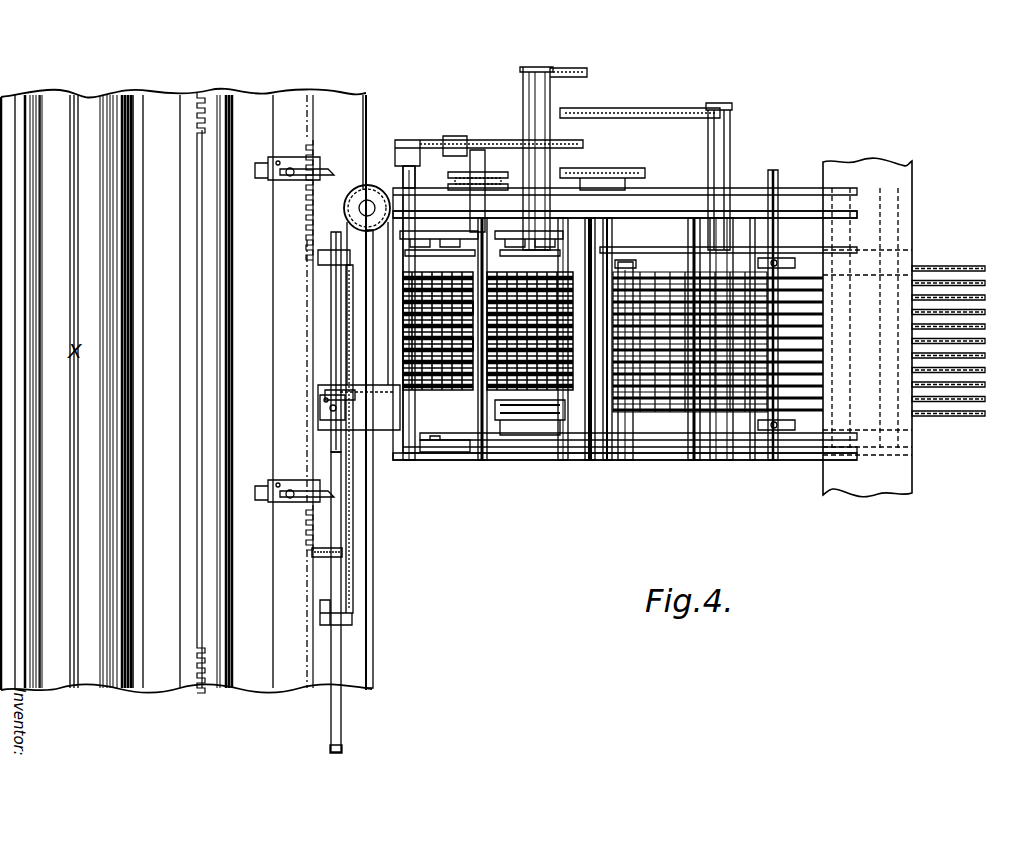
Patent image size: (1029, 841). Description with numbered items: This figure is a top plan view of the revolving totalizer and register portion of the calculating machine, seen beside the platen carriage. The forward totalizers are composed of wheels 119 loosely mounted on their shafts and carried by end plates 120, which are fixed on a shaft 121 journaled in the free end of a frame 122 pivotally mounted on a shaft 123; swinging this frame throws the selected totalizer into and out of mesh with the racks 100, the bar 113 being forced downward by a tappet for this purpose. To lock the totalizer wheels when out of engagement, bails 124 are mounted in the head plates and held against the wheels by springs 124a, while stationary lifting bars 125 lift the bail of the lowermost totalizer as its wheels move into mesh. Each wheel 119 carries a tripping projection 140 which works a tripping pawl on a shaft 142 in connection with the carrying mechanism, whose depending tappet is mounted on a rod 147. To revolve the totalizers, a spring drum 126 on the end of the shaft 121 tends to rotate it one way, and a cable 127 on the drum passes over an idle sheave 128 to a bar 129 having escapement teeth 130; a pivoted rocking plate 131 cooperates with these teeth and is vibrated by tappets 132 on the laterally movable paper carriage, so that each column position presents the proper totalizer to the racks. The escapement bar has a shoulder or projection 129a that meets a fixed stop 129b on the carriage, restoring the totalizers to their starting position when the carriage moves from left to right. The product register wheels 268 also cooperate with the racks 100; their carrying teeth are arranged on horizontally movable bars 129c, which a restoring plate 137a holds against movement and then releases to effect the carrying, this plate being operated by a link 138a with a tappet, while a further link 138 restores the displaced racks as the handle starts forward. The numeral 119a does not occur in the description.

The racks 100 is at (985, 357).
The bar 113 is at (580, 67).
The totalizer wheels 119 is at (403, 274).
The gear 119a is at (410, 312).
The end plates 120 is at (491, 334).
The shaft 121 is at (502, 456).
The frame 122 is at (655, 215).
The shaft 123 is at (848, 374).
The bails 124 is at (530, 421).
The springs 124a is at (404, 410).
The lifting bars 125 is at (439, 231).
The spring drum 126 is at (480, 191).
The cable 127 is at (367, 496).
The idle sheave 128 is at (356, 188).
The escapement bar 129 is at (330, 310).
The shoulder or projection 129a is at (342, 750).
The fixed stop 129b is at (342, 552).
The horizontally movable bar 129c is at (640, 405).
The escapement teeth 130 is at (352, 524).
The pivoted rocking plate 131 is at (330, 405).
The tappets 132 is at (288, 183).
The restoring plate 137a is at (592, 430).
The link 138 is at (492, 140).
The link 138a is at (607, 173).
The tripping projection 140 is at (430, 345).
The shaft 142 is at (565, 262).
The rod 147 is at (633, 237).
The wheels 268 is at (716, 420).